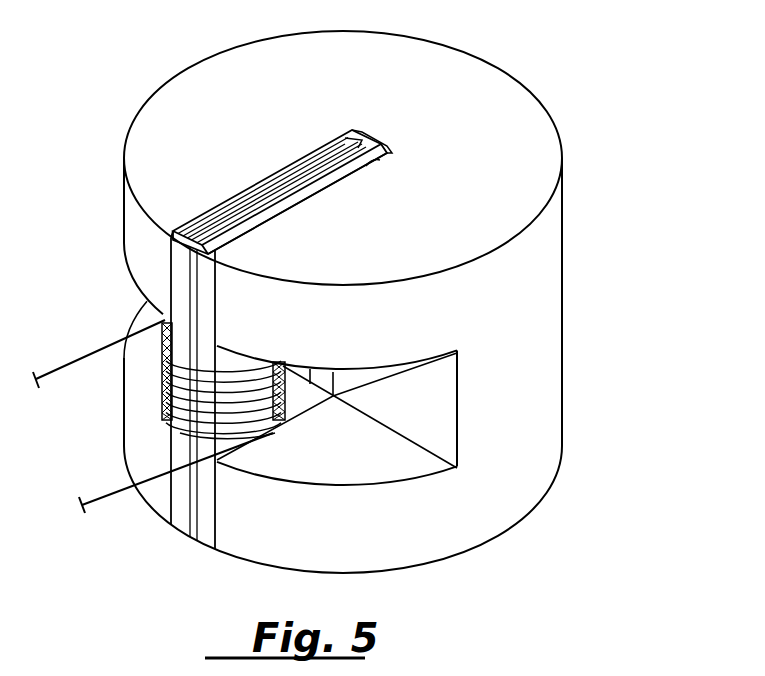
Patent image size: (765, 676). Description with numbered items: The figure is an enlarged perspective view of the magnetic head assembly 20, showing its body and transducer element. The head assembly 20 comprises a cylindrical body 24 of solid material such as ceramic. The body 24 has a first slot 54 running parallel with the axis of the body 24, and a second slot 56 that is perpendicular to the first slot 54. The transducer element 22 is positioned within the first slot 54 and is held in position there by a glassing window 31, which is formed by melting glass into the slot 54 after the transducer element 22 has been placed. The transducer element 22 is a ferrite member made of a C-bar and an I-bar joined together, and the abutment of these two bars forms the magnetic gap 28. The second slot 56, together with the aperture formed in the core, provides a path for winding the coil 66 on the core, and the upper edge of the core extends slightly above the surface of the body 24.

The magnetic head assembly 20 is at (552, 99).
The transducer element 22 is at (240, 214).
The cylindrical body 24 is at (557, 340).
The magnetic gap 28 is at (279, 192).
The glassing window 31 is at (322, 190).
The first slot 54 is at (372, 170).
The second slot 56 is at (358, 481).
The coil 66 is at (178, 437).